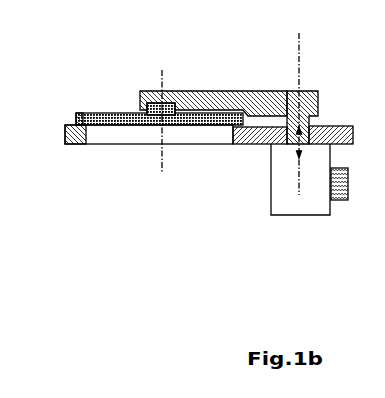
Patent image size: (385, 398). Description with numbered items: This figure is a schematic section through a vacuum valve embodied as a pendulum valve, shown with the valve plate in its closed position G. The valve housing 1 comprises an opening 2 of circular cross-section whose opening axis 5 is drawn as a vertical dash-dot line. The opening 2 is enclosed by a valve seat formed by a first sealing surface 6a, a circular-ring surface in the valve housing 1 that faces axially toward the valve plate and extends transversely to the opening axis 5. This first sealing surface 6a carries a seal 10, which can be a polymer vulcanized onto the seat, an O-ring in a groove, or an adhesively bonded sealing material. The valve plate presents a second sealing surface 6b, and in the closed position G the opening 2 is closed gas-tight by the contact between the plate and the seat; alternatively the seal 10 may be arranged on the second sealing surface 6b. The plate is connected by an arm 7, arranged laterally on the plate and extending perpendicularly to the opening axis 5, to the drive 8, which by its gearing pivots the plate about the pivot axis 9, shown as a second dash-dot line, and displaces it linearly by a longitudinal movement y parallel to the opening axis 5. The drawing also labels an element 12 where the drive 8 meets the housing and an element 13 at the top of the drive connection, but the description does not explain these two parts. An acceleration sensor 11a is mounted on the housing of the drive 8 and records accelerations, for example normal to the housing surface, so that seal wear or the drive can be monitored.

The valve housing 1 is at (318, 131).
The opening 2 is at (182, 137).
The opening axis 5 is at (162, 72).
The first sealing surface 6a is at (78, 133).
The second sealing surface 6b is at (78, 115).
The arm 7 is at (225, 98).
The drive 8 is at (297, 132).
The pivot axis 9 is at (301, 57).
The seal 10 is at (77, 123).
The acceleration sensor 11a is at (342, 203).
The support plate 12 is at (284, 141).
The pin 13 is at (303, 93).
The longitudinal movement y is at (283, 205).
The closed position G is at (90, 300).